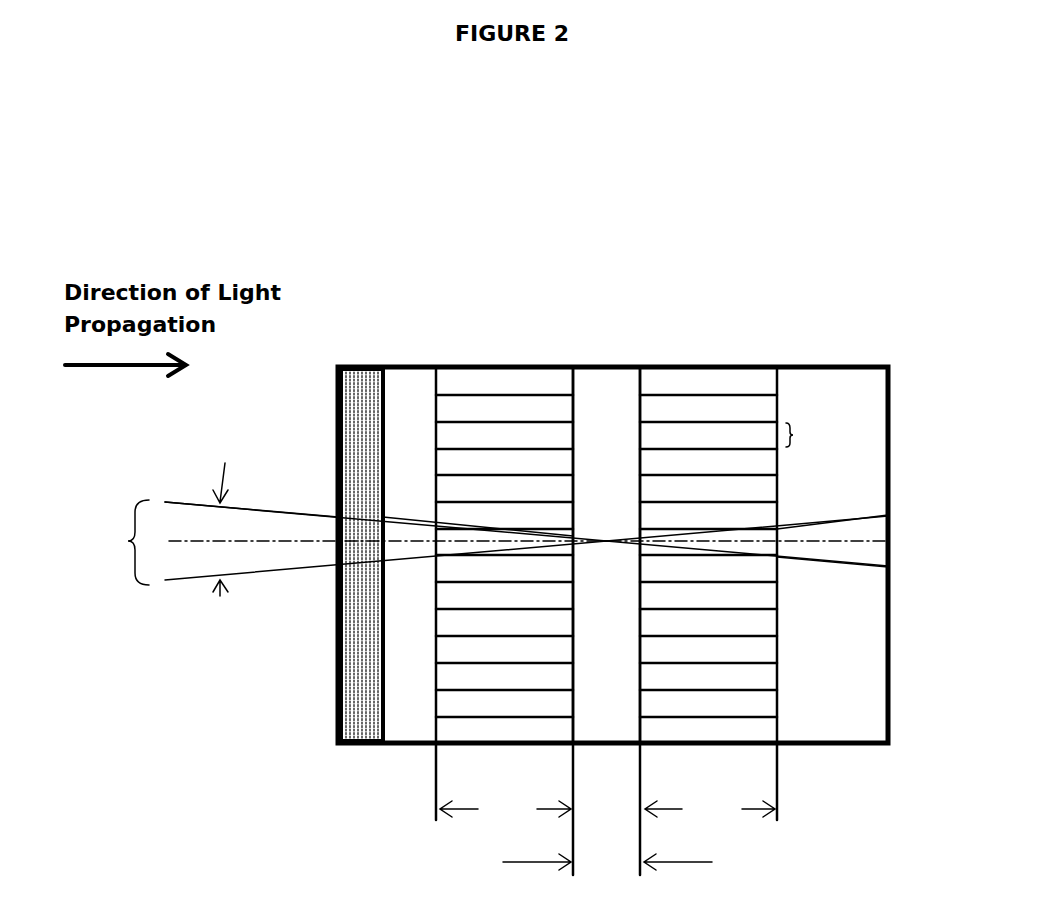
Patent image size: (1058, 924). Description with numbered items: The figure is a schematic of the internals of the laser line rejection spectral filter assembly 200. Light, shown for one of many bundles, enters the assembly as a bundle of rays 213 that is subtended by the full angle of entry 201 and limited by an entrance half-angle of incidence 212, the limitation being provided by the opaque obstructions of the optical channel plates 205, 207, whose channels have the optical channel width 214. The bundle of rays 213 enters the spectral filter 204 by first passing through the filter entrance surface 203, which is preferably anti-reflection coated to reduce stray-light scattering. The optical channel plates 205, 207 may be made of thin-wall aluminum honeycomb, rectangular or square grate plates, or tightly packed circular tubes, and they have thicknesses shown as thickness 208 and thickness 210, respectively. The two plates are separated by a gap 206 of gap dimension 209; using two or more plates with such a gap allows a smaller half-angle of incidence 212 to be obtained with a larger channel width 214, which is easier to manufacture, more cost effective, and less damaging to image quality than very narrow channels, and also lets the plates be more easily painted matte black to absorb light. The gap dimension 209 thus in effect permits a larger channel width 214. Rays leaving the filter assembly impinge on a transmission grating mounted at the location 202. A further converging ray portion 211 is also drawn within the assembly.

The spectral filter assembly 200 is at (803, 366).
The full angle of entry 201 is at (476, 542).
The transmission grating location 202 is at (860, 541).
The filter entrance surface 203 is at (340, 630).
The spectral filter 204 is at (353, 745).
The optical channel plate 205 is at (514, 394).
The gap 206 is at (603, 405).
The optical channel plate 207 is at (703, 394).
The thickness S1 208 is at (492, 827).
The gap dimension D 209 is at (607, 881).
The thickness S2 210 is at (730, 828).
The converging beam portion 211 is at (453, 537).
The entrance half-angle of incidence 212 is at (232, 513).
The bundle of rays 213 is at (312, 513).
The optical channel width 214 is at (833, 426).